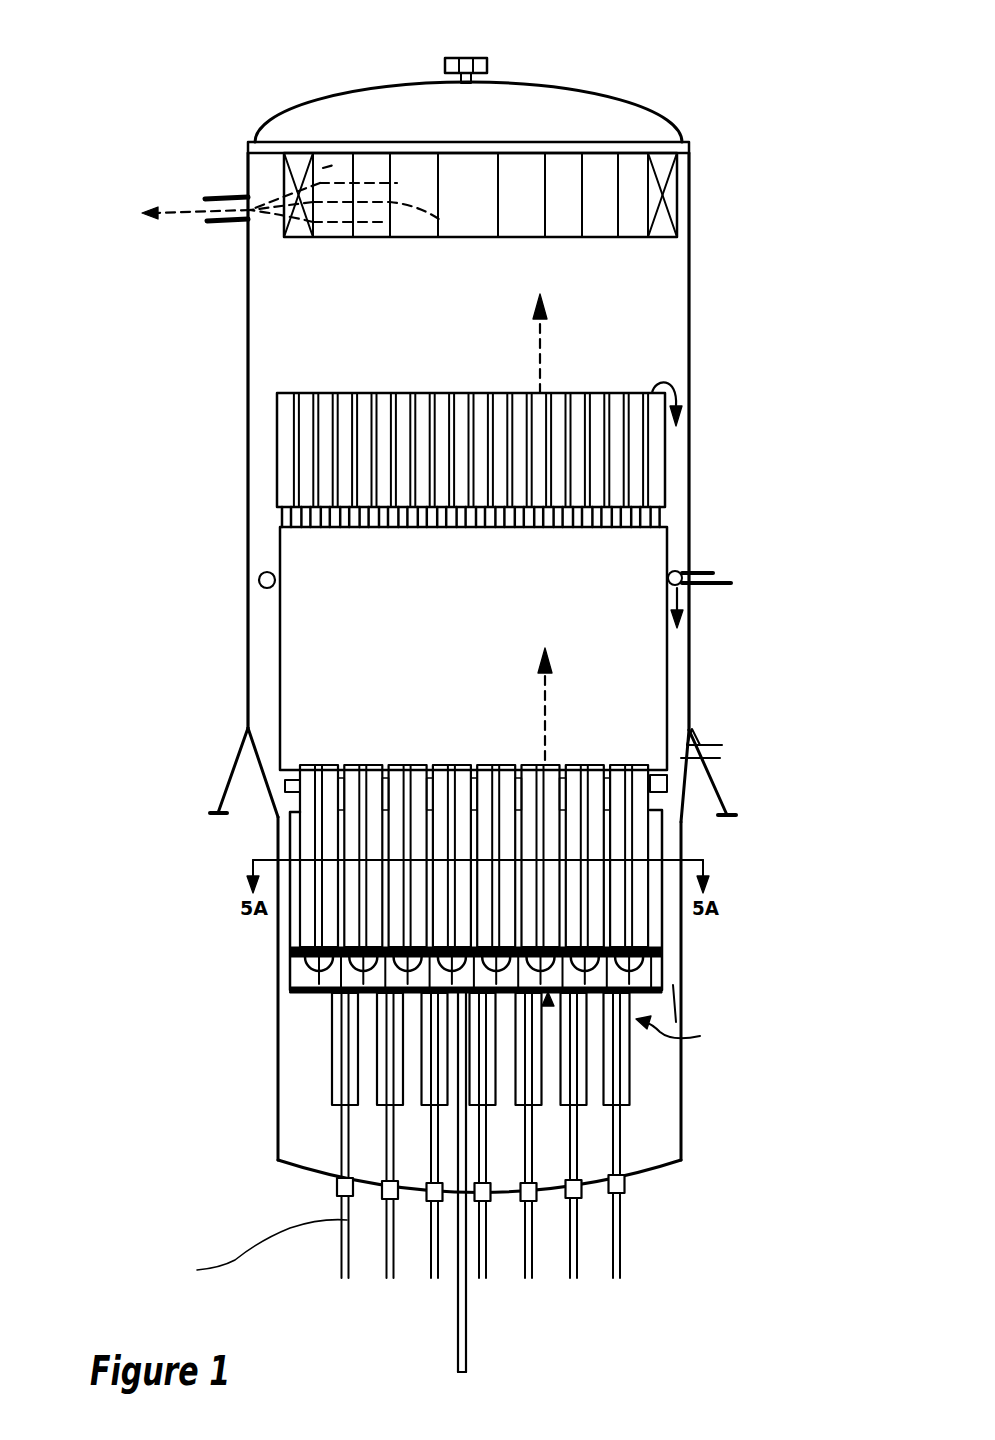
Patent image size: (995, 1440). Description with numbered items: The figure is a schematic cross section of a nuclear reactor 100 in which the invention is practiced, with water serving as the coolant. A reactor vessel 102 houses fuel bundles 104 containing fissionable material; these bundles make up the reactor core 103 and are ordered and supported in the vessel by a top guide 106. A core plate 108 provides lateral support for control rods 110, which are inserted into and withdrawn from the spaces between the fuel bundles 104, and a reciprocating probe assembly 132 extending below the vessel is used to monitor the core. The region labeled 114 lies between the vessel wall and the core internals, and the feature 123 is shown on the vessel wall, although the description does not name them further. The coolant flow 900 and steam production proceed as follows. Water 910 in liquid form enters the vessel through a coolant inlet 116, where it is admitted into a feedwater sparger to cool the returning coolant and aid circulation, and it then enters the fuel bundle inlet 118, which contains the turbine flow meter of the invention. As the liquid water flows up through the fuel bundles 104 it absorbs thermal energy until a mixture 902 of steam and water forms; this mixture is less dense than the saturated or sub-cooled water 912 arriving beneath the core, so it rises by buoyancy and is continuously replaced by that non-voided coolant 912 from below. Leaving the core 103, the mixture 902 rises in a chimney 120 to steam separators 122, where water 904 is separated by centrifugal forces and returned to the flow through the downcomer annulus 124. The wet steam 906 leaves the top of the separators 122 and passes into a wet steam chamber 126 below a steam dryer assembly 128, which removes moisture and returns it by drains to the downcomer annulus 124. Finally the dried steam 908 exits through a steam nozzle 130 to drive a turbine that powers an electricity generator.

The nuclear reactor 100 is at (222, 72).
The reactor vessel 102 is at (690, 438).
The reactor core 103 is at (752, 773).
The fuel bundles 104 is at (310, 845).
The top guide 106 is at (287, 786).
The core plate 108 is at (667, 977).
The control rods 110 is at (620, 1057).
The downcomer annulus 114 is at (143, 719).
The coolant inlet 116 is at (700, 572).
The fuel bundle inlet 118 is at (303, 976).
The chimney 120 is at (488, 664).
The steam separators 122 is at (277, 425).
The coolant level / annulus inlet 123 is at (259, 578).
The downcomer annulus 124 is at (262, 637).
The wet steam chamber 126 is at (483, 321).
The steam dryer assembly 128 is at (483, 208).
The steam nozzle 130 is at (215, 224).
The reciprocating probe assembly 132 is at (457, 1313).
The coolant flow 900 is at (548, 1004).
The mixture of steam and water 902 is at (545, 678).
The water separated in the steam separators 904 is at (694, 396).
The wet steam 906 is at (540, 337).
The dried steam 908 is at (185, 204).
The water in liquid form 910 is at (731, 583).
The saturated or sub-cooled water 912 is at (688, 1016).